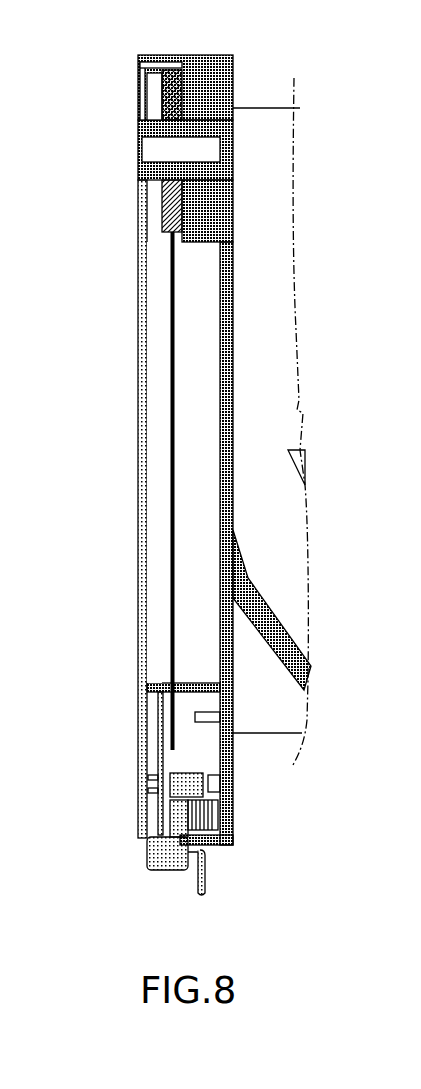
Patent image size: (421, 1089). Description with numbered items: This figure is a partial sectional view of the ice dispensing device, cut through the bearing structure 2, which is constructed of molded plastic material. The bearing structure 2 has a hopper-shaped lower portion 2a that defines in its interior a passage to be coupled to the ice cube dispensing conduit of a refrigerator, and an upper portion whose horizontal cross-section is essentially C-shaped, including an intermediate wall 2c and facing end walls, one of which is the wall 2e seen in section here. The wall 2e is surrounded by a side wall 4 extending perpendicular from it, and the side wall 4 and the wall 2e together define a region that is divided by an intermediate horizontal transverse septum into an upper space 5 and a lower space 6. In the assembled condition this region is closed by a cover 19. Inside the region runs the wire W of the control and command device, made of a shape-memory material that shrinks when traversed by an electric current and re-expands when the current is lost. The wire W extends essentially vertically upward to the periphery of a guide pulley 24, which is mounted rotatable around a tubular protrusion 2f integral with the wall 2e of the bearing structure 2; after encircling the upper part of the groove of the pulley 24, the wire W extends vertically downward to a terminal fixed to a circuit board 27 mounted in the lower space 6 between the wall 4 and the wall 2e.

The bearing structure 2 is at (277, 108).
The lower portion 2a is at (286, 641).
The intermediate wall 2c is at (263, 240).
The end wall 2e is at (233, 303).
The tubular protrusion 2f is at (137, 97).
The side wall 4 is at (160, 372).
The wire W is at (171, 446).
The space 5 is at (210, 545).
The lower space 6 is at (200, 710).
The cover 19 is at (138, 535).
The guide pulley 24 is at (170, 203).
The circuit board 27 is at (158, 730).